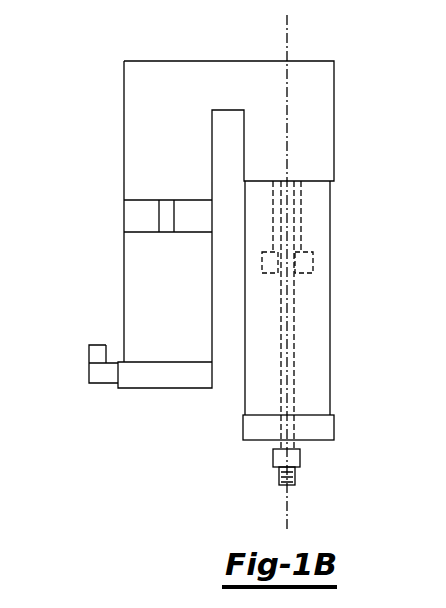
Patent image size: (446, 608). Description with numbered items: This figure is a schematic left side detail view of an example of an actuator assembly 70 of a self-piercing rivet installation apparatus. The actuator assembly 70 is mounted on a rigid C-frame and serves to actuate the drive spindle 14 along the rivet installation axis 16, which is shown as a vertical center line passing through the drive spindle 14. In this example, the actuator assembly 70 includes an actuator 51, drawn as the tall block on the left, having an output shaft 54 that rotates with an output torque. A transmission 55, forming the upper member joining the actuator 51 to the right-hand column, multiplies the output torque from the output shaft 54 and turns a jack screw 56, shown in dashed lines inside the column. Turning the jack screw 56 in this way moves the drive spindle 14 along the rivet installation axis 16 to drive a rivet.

The actuator assembly 70 is at (80, 160).
The transmission 55 is at (226, 92).
The output shaft 54 is at (165, 220).
The actuator 51 is at (124, 287).
The jack screw 56 is at (295, 320).
The drive spindle 14 is at (297, 443).
The rivet installation axis 16 is at (289, 515).